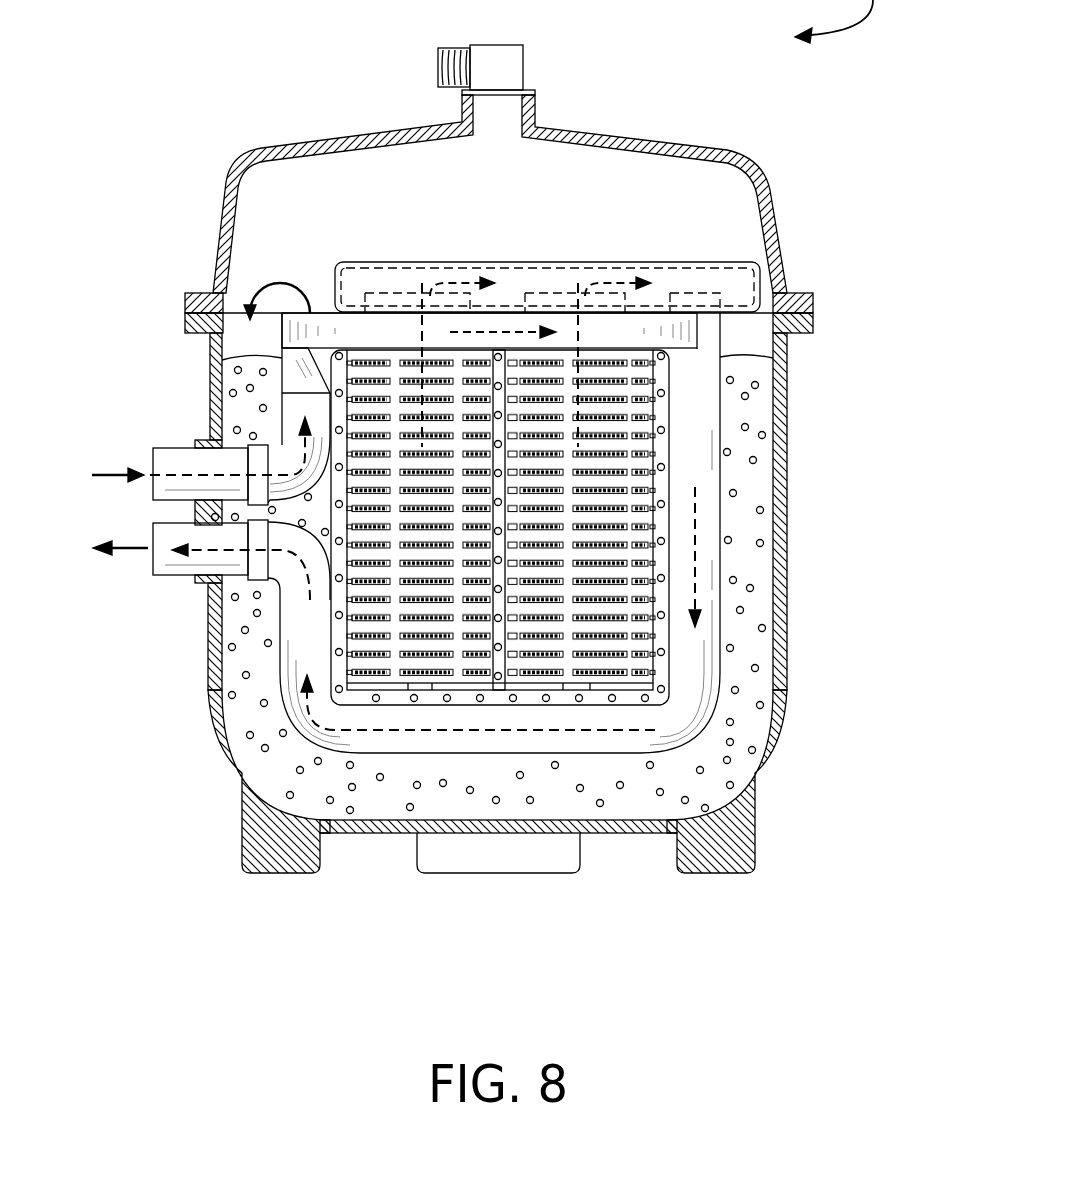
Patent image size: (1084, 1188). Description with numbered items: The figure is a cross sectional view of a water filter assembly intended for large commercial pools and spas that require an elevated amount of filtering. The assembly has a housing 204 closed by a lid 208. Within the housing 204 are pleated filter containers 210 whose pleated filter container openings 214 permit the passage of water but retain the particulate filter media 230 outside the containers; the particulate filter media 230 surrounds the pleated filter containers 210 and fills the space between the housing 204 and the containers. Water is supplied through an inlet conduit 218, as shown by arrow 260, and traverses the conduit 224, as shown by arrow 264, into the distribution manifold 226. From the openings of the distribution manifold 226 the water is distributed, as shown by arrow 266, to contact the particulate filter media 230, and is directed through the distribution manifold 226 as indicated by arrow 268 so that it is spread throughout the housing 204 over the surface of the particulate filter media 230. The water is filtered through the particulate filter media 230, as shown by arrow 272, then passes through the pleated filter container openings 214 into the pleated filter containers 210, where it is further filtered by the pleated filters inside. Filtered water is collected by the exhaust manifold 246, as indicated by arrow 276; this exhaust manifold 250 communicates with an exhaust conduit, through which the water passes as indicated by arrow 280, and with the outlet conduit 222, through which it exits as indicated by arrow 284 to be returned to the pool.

The housing 204 is at (787, 393).
The lid 208 is at (781, 210).
The pleated filter containers 210 is at (360, 660).
The pleated filter container openings 214 is at (600, 652).
The inlet conduit 218 is at (165, 447).
The outlet conduit 222 is at (170, 577).
The conduit 224 is at (282, 398).
The distribution manifold 226 is at (700, 332).
The particulate filter media 230 is at (238, 366).
The exhaust manifold 246 is at (390, 263).
The exhaust manifold 250 is at (700, 417).
The arrow 260 is at (115, 473).
The arrow 264 is at (302, 446).
The arrow 266 is at (283, 283).
The arrow 268 is at (512, 325).
The arrow 272 is at (408, 513).
The arrow 276 is at (443, 280).
The arrow 280 is at (388, 732).
The arrow 284 is at (128, 550).